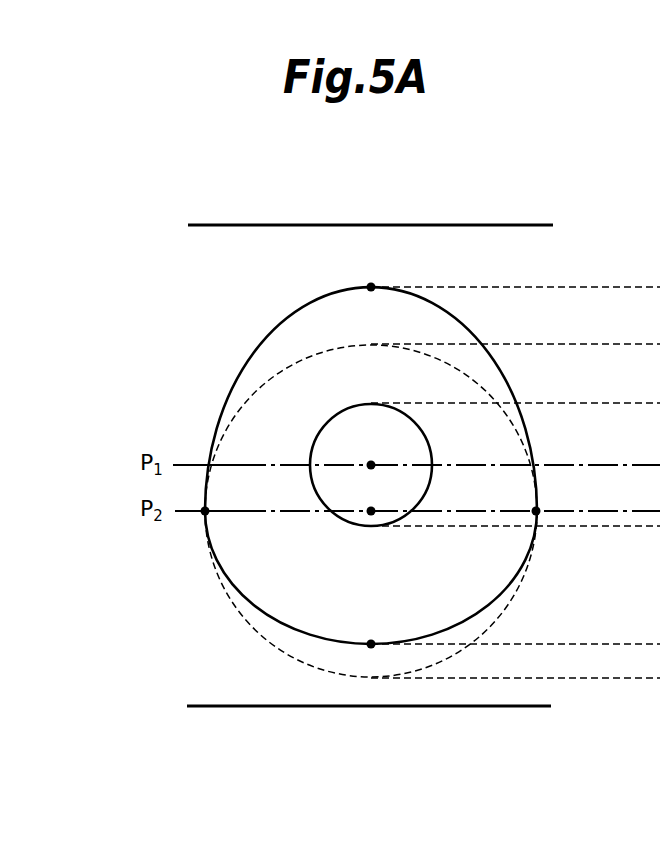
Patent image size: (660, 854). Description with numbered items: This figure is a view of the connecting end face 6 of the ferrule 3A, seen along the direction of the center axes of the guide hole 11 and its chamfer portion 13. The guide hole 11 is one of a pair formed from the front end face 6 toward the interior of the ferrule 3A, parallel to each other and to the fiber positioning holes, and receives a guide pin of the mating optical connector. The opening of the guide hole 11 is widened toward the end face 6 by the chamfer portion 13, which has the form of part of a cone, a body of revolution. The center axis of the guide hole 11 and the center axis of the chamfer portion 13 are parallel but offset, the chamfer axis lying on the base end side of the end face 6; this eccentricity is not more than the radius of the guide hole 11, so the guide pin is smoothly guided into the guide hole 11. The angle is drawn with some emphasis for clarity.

The ferrule 3A is at (497, 235).
The front end face 6 is at (258, 695).
The guide hole 11 is at (336, 432).
The chamfer portion 13 is at (507, 561).